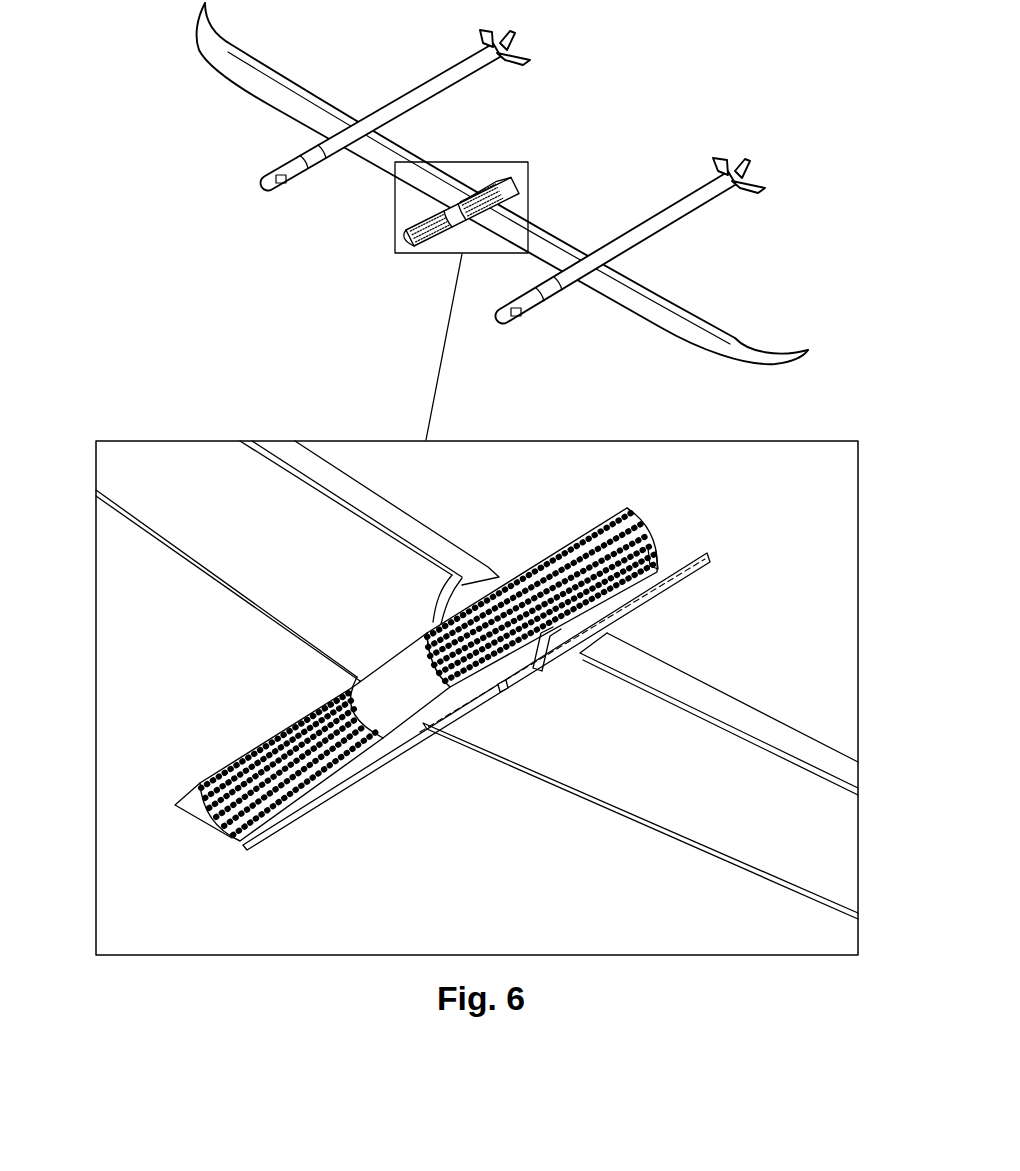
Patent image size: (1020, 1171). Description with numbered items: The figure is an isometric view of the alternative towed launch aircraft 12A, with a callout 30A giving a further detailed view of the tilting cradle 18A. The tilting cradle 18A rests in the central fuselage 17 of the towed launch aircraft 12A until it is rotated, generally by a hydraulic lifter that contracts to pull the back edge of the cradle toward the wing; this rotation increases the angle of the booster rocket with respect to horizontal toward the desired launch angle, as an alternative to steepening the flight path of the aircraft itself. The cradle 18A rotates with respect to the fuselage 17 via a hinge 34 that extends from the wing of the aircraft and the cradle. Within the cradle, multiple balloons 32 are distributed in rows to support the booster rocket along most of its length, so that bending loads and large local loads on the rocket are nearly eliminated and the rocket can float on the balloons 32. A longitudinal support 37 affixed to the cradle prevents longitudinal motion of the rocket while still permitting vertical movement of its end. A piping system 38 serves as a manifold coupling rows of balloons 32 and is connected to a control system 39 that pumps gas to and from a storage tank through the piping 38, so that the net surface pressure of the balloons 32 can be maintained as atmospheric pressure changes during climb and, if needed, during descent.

The towed launch aircraft 12A is at (535, 296).
The central fuselage 17 is at (398, 240).
The tilting cradle 18A is at (516, 187).
The callout 30A is at (528, 162).
The balloons 32 is at (634, 520).
The hinge 34 is at (549, 636).
The longitudinal support 37 is at (657, 556).
The piping system 38 is at (656, 598).
The control system 39 is at (508, 688).